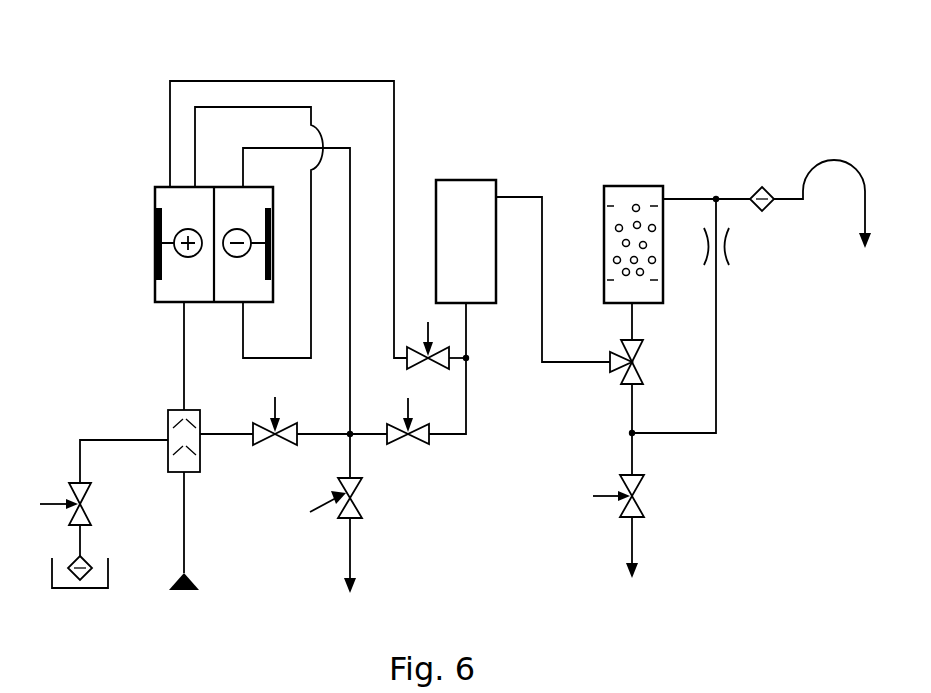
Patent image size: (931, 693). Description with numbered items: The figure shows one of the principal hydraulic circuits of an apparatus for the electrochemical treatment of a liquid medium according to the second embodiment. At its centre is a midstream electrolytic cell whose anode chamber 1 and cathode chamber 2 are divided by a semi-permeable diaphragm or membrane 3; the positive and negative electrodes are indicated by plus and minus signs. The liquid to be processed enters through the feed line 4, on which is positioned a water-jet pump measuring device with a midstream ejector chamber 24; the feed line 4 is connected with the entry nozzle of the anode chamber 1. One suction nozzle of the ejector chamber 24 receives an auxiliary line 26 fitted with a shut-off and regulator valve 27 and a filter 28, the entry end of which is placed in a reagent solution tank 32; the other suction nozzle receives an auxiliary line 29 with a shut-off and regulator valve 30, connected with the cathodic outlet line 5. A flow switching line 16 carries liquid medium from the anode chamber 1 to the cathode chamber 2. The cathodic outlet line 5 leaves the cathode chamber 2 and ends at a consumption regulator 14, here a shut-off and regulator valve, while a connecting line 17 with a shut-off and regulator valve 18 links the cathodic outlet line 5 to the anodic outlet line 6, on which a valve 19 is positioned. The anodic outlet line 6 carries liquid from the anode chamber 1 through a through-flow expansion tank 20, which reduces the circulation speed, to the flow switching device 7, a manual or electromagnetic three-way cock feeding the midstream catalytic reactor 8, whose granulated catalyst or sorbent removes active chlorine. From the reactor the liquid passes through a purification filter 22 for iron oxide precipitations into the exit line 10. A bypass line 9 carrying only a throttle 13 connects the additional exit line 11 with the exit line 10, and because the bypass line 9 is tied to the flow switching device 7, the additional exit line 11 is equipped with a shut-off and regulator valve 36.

The anode chamber 1 is at (170, 287).
The cathode chamber 2 is at (233, 287).
The membrane 3 is at (212, 208).
The feed line 4 is at (187, 545).
The cathodic outlet line 5 is at (243, 162).
The anodic outlet line 6 is at (172, 80).
The flow switching device 7 is at (625, 382).
The midstream catalytic reactor 8 is at (630, 186).
The bypass line 9 is at (717, 348).
The exit line 10 is at (845, 161).
The additional exit line 11 is at (633, 452).
The throttle 13 is at (728, 248).
The consumption regulator 14 is at (357, 498).
The flow switching line 16 is at (195, 125).
The connecting line 17 is at (467, 406).
The shut-off and regulator valve 18 is at (418, 445).
The valve 19 is at (416, 372).
The through-flow expansion tank 20 is at (460, 180).
The purification filter 22 is at (762, 187).
The ejector chamber 24 is at (167, 413).
The auxiliary line 26 is at (112, 440).
The shut-off and regulator valve 27 is at (72, 488).
The filter 28 is at (92, 562).
The auxiliary line 29 is at (210, 434).
The shut-off and regulator valve 30 is at (272, 448).
The reagent solution tank 32 is at (82, 590).
The shut-off and regulator valve 36 is at (642, 517).